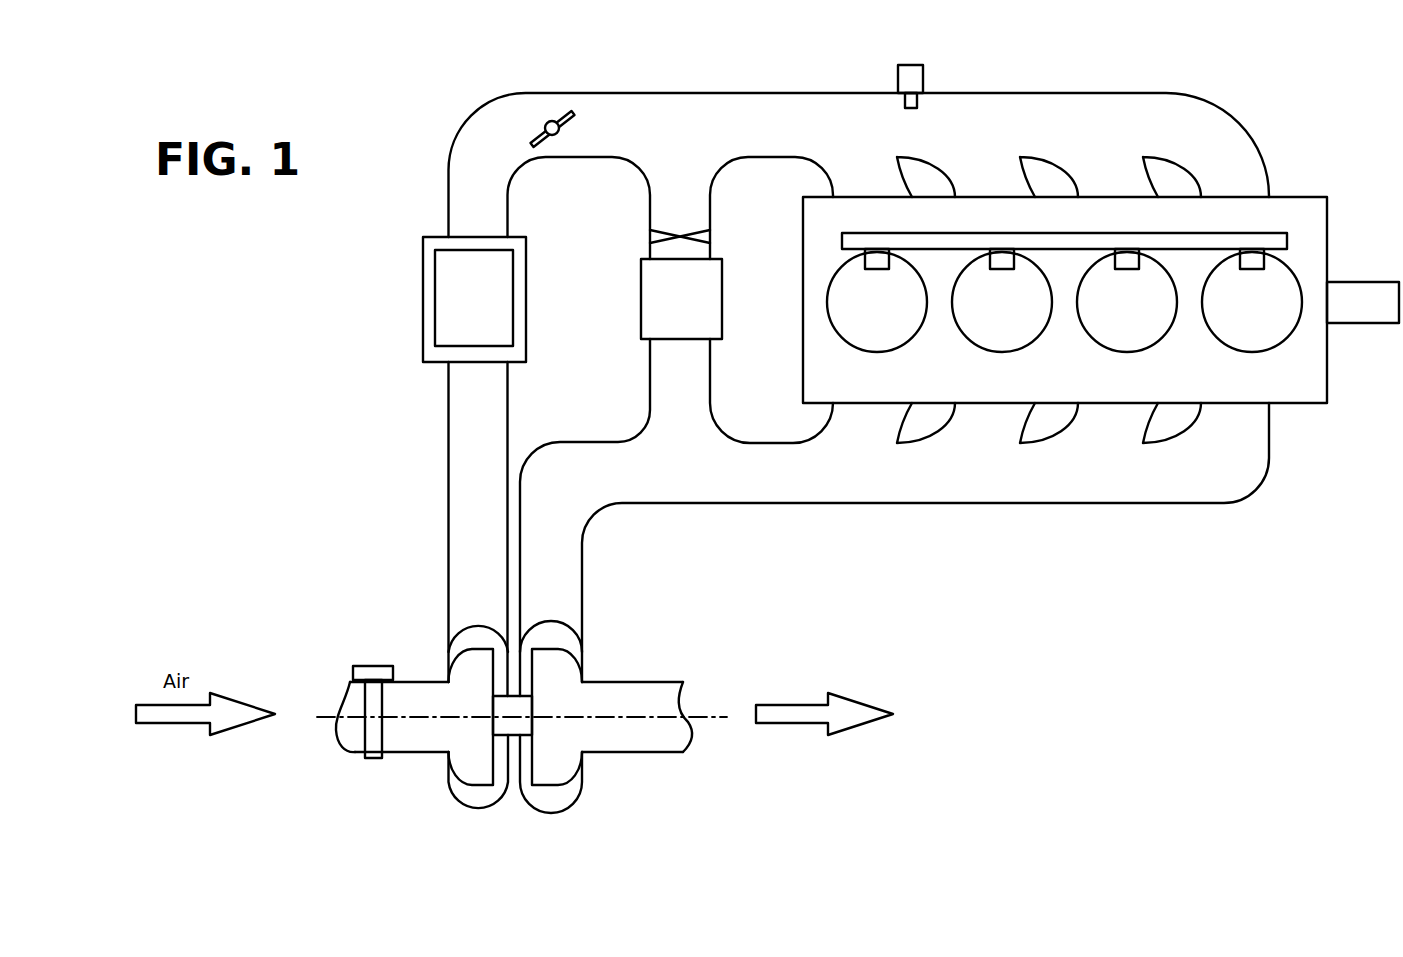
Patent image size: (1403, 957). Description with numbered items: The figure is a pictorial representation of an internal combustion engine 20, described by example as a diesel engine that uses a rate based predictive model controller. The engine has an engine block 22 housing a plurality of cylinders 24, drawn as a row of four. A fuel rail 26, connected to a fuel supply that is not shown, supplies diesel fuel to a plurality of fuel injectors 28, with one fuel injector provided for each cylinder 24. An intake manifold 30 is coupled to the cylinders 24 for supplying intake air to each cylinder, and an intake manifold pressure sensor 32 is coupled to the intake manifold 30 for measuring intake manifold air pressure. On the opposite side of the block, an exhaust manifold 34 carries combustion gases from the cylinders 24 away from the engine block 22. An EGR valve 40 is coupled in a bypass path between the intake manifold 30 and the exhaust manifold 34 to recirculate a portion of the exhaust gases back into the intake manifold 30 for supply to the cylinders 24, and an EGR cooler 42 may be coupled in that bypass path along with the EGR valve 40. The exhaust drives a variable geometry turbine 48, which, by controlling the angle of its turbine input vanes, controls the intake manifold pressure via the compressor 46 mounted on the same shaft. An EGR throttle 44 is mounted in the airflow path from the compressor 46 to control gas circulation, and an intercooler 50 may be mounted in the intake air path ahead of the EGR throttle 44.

The internal combustion engine 20 is at (810, 88).
The engine block 22 is at (995, 385).
The cylinders 24 is at (858, 344).
The fuel rail 26 is at (1205, 234).
The fuel injectors 28 is at (879, 262).
The intake manifold 30 is at (1145, 94).
The intake manifold pressure sensor 32 is at (923, 78).
The exhaust manifold 34 is at (1122, 503).
The EGR valve 40 is at (665, 233).
The EGR cooler 42 is at (638, 288).
The EGR throttle 44 is at (540, 113).
The compressor 46 is at (467, 748).
The variable geometry turbine 48 is at (553, 748).
The intercooler 50 is at (422, 303).